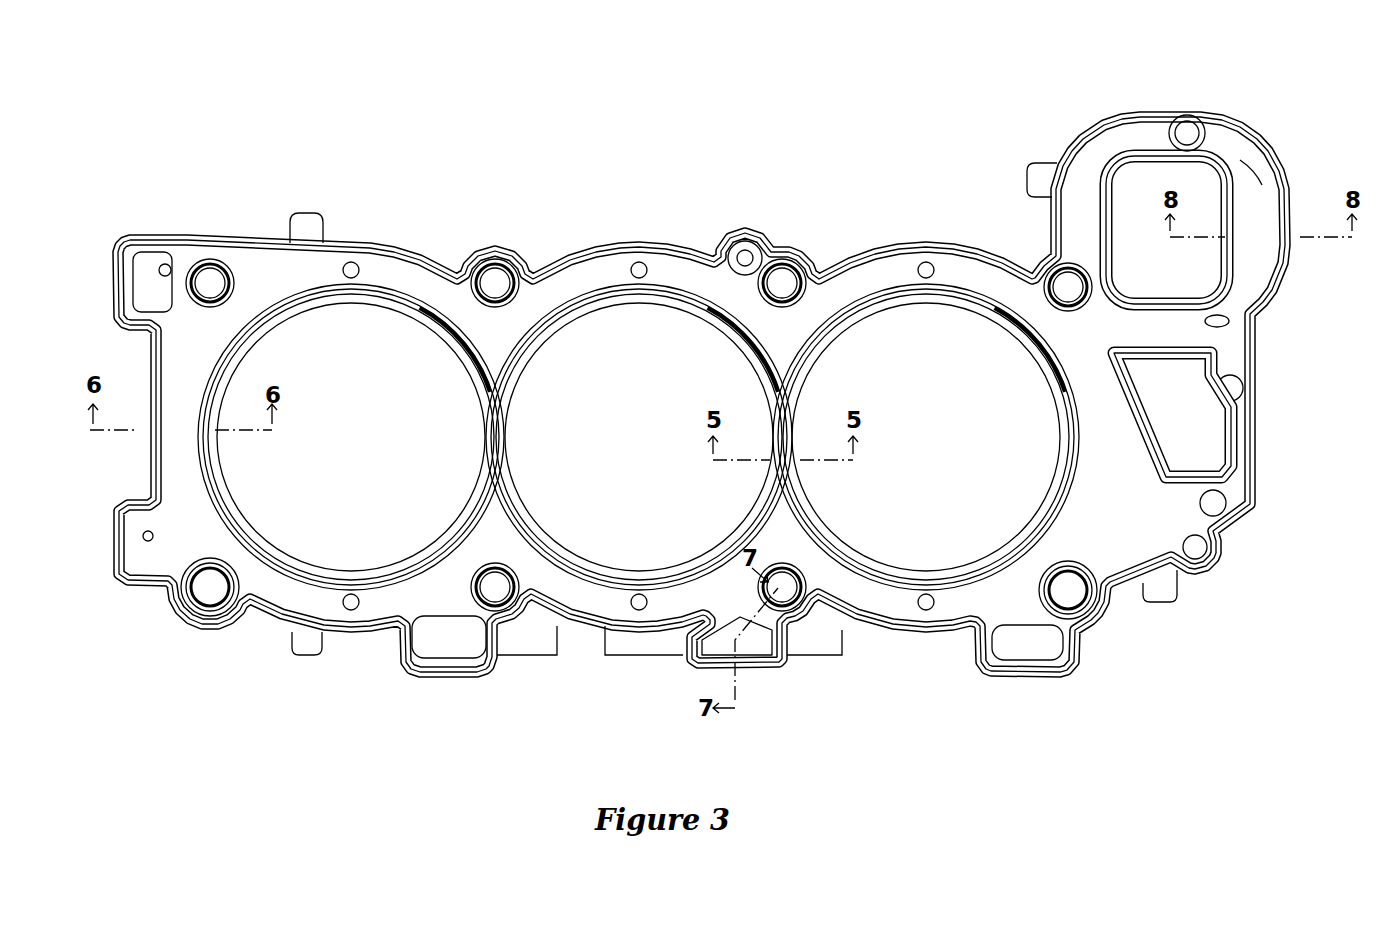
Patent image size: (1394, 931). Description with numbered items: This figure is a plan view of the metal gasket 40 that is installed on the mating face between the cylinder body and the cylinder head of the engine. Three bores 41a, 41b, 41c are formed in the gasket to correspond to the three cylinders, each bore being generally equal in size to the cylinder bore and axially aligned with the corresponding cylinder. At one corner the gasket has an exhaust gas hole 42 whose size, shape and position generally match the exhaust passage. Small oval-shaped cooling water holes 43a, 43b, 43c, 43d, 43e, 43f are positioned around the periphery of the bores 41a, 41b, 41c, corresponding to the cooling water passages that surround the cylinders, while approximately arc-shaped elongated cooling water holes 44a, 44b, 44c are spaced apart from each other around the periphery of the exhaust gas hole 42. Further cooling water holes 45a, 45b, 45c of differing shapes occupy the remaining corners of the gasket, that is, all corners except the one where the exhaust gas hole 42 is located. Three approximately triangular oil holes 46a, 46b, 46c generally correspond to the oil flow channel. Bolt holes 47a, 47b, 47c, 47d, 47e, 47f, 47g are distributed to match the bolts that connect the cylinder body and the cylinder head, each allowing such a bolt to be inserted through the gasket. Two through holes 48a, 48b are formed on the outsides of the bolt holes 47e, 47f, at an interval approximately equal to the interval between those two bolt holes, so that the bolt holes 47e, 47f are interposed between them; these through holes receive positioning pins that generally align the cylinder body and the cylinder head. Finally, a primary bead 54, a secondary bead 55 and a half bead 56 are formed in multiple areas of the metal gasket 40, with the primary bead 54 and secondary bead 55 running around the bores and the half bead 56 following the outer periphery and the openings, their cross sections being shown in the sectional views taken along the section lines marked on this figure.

The metal gasket 40 is at (696, 359).
The bore 41a is at (415, 322).
The bore 41b is at (700, 325).
The bore 41c is at (985, 325).
The exhaust gas hole 42 is at (1217, 262).
The cooling water hole 43a is at (351, 264).
The cooling water hole 43b is at (639, 264).
The cooling water hole 43c is at (926, 264).
The cooling water hole 43d is at (351, 610).
The cooling water hole 43e is at (638, 610).
The cooling water hole 43f is at (925, 610).
The arc-shaped elongated cooling water hole 44a is at (1132, 135).
The arc-shaped elongated cooling water hole 44b is at (1250, 167).
The arc-shaped elongated cooling water hole 44c is at (1222, 320).
The cooling water hole 45a is at (164, 266).
The cooling water hole 45b is at (153, 537).
The cooling water hole 45c is at (1220, 505).
The oil hole 46a is at (450, 650).
The oil hole 46b is at (765, 650).
The oil hole 46c is at (1030, 650).
The bolt hole 47a is at (210, 272).
The bolt hole 47b is at (495, 272).
The bolt hole 47c is at (782, 272).
The bolt hole 47d is at (1064, 284).
The bolt hole 47e is at (500, 605).
The bolt hole 47f is at (781, 575).
The bolt hole 47g is at (1236, 390).
The through hole 48a is at (210, 603).
The through hole 48b is at (1078, 604).
The primary bead 54 is at (351, 303).
The secondary bead 55 is at (215, 352).
The half bead 56 is at (152, 465).